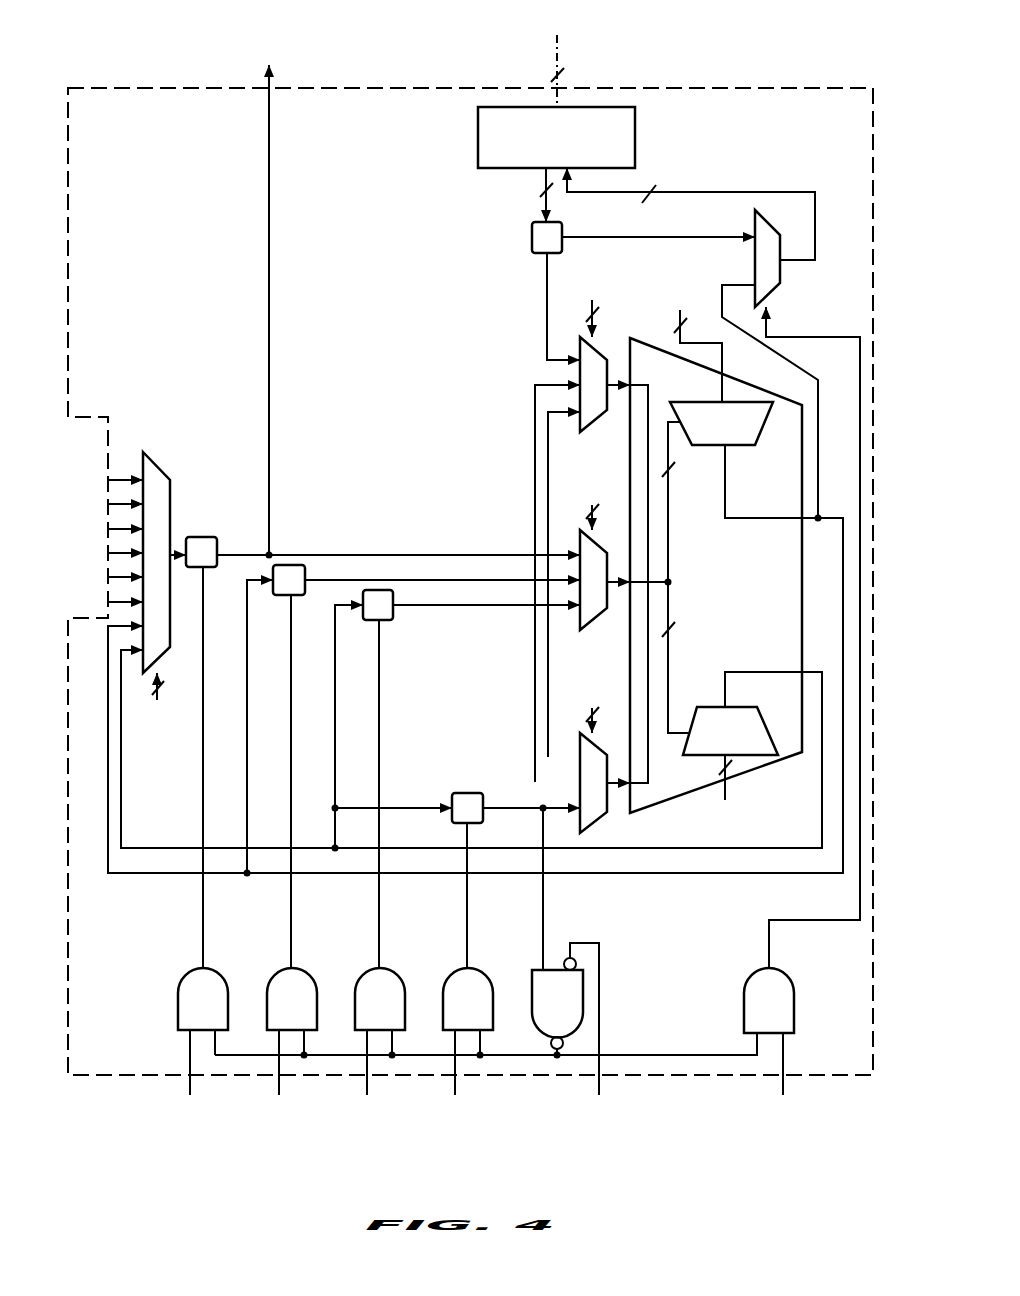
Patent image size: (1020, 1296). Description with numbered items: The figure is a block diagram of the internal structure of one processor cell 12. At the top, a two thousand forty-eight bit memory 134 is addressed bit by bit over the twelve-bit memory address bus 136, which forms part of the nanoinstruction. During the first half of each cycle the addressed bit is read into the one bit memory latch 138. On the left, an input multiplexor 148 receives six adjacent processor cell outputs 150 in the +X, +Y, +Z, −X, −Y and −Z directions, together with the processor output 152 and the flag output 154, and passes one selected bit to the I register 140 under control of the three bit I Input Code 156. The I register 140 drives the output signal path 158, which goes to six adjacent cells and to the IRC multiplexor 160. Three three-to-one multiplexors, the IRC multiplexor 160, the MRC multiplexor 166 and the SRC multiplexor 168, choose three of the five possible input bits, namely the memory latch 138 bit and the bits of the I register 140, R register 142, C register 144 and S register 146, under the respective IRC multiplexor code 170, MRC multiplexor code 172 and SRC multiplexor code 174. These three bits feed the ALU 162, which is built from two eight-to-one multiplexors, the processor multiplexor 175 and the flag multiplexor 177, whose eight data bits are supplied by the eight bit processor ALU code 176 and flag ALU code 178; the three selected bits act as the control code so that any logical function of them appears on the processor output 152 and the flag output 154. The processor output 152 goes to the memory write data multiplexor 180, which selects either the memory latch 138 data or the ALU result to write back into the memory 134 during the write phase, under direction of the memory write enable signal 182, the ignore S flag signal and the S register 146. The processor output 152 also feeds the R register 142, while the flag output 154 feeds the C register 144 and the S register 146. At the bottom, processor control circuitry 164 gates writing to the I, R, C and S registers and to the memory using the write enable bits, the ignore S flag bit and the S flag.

The processor cell 12 is at (143, 84).
The memory 134 is at (478, 128).
The memory address bus 136 is at (560, 48).
The memory latch 138 is at (532, 236).
The I register 140 is at (205, 537).
The R register 142 is at (293, 565).
The C register 144 is at (376, 590).
The S register 146 is at (470, 793).
The input multiplexor 148 is at (154, 465).
The adjacent processor cell outputs 150 is at (85, 460).
The processor output 152 is at (818, 517).
The flag output 154 is at (822, 672).
The I Input Code 156 is at (165, 701).
The output signal path 158 is at (269, 310).
The IRC multiplexor 160 is at (580, 535).
The ALU 162 is at (716, 575).
The processor control circuitry 164 is at (165, 984).
The MRC multiplexor 166 is at (580, 368).
The SRC multiplexor 168 is at (580, 735).
The IRC multiplexor code 170 is at (592, 491).
The MRC multiplexor code 172 is at (592, 309).
The SRC multiplexor code 174 is at (592, 707).
The processor multiplexor 175 is at (745, 445).
The processor ALU code 176 is at (680, 322).
The flag multiplexor 177 is at (712, 706).
The flag ALU code 178 is at (727, 792).
The memory write data multiplexor 180 is at (755, 217).
The memory write enable signal 182 is at (785, 1055).